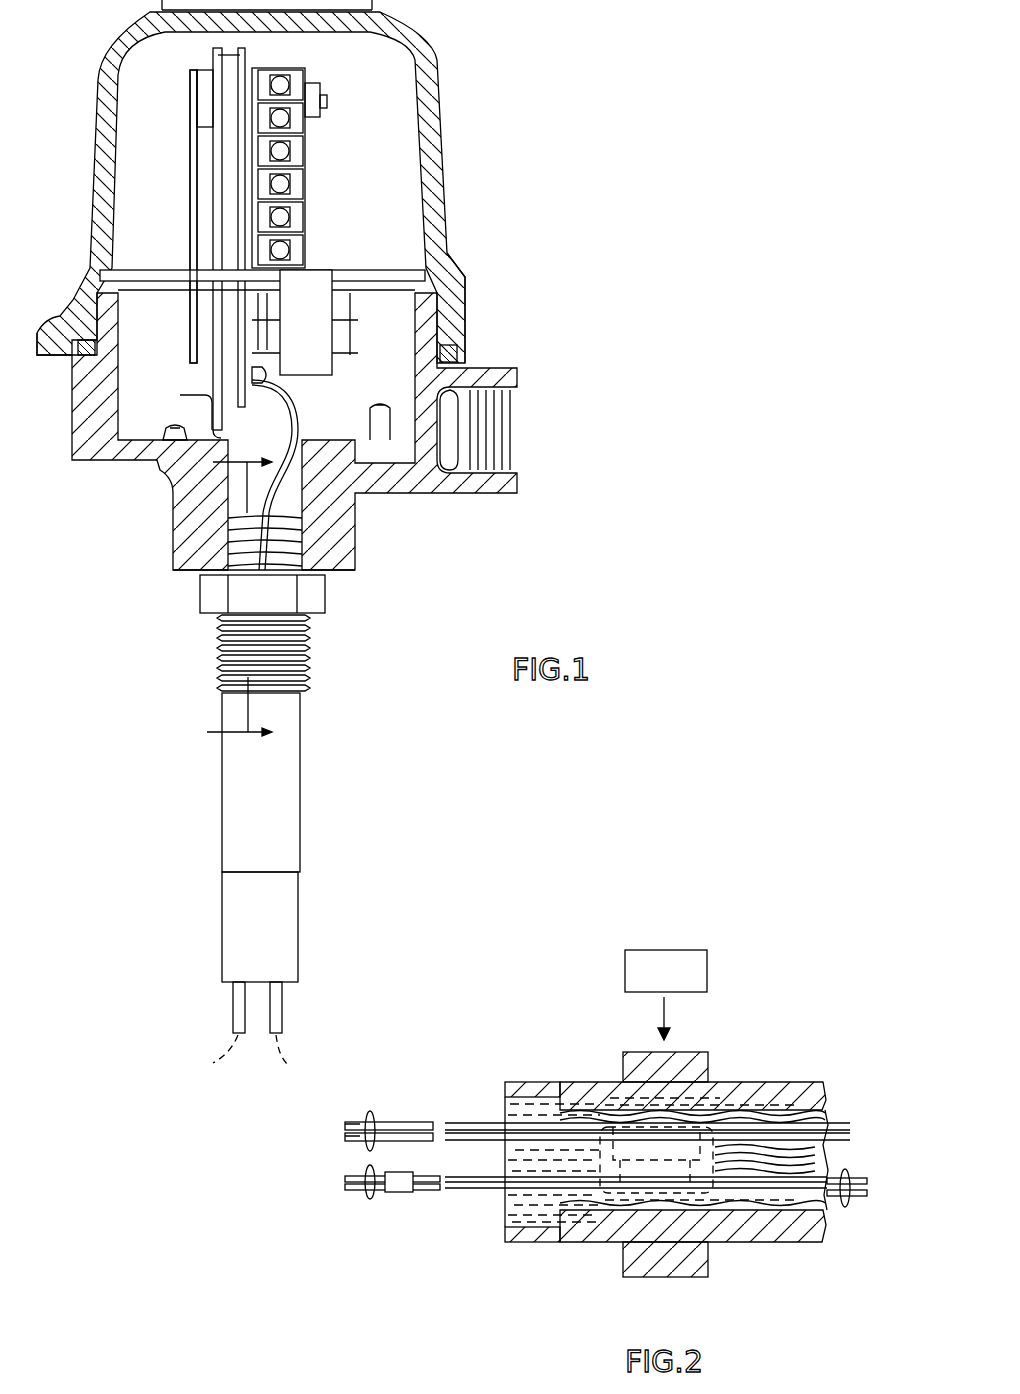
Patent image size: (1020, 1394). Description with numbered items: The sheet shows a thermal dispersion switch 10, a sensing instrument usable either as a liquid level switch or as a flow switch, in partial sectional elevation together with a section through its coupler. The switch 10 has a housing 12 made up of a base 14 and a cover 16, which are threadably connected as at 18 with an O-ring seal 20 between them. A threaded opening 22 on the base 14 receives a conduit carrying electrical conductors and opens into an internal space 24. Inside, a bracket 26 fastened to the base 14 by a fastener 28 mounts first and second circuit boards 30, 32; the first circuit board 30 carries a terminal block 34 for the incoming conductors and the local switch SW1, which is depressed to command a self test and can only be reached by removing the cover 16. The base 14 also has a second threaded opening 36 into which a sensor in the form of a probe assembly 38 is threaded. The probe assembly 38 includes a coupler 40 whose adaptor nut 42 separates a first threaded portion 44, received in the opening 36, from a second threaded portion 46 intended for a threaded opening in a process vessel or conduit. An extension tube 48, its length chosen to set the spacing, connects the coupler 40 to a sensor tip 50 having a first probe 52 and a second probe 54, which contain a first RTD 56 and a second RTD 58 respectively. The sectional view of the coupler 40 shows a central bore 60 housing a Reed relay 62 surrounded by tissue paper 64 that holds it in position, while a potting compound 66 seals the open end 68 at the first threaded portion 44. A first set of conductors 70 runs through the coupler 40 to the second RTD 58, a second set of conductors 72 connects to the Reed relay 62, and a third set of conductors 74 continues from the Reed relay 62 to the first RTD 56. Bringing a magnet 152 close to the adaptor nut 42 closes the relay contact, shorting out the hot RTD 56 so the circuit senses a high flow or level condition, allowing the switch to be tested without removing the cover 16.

In FIG. 1, the thermal dispersion switch 10 is at (552, 163).
In FIG. 1, the housing 12 is at (445, 125).
In FIG. 1, the base 14 is at (460, 480).
In FIG. 1, the cover 16 is at (430, 232).
In FIG. 1, the threaded connection 18 is at (463, 310).
In FIG. 1, the O-ring seal 20 is at (463, 355).
In FIG. 1, the threaded opening 22 is at (517, 393).
In FIG. 1, the internal space 24 is at (380, 95).
In FIG. 1, the bracket 26 is at (220, 408).
In FIG. 1, the fastener 28 is at (163, 428).
In FIG. 1, the first circuit board 30 is at (270, 43).
In FIG. 1, the second circuit board 32 is at (190, 83).
In FIG. 1, the terminal block 34 is at (300, 177).
In FIG. 1, the local switch SW1 is at (320, 100).
In FIG. 1, the second threaded opening 36 is at (237, 503).
In FIG. 1, the probe assembly 38 is at (330, 597).
In FIG. 1, the coupler 40 is at (307, 648).
In FIG. 2, the coupler 40 is at (755, 1040).
In FIG. 1, the adaptor nut 42 is at (208, 593).
In FIG. 2, the adaptor nut 42 is at (672, 1057).
In FIG. 1, the first threaded portion 44 is at (310, 543).
In FIG. 2, the first threaded portion 44 is at (570, 1080).
In FIG. 1, the second threaded portion 46 is at (233, 660).
In FIG. 2, the second threaded portion 46 is at (753, 1080).
In FIG. 1, the extension tube 48 is at (278, 807).
In FIG. 1, the sensor tip 50 is at (277, 938).
In FIG. 1, the first probe 52 is at (240, 1003).
In FIG. 1, the second probe 54 is at (277, 1007).
In FIG. 1, the first resistance temperature device 56 is at (209, 1059).
In FIG. 1, the second resistance temperature device 58 is at (297, 1059).
In FIG. 2, the central bore 60 is at (807, 1208).
In FIG. 2, the Reed relay 62 is at (557, 1213).
In FIG. 2, the tissue paper 64 is at (807, 1160).
In FIG. 2, the potting compound 66 is at (505, 1160).
In FIG. 2, the open end 68 is at (505, 1103).
In FIG. 2, the first set of conductors 70 is at (372, 1112).
In FIG. 2, the second set of conductors 72 is at (372, 1200).
In FIG. 2, the third set of conductors 74 is at (817, 1207).
In FIG. 2, the magnet 152 is at (685, 958).